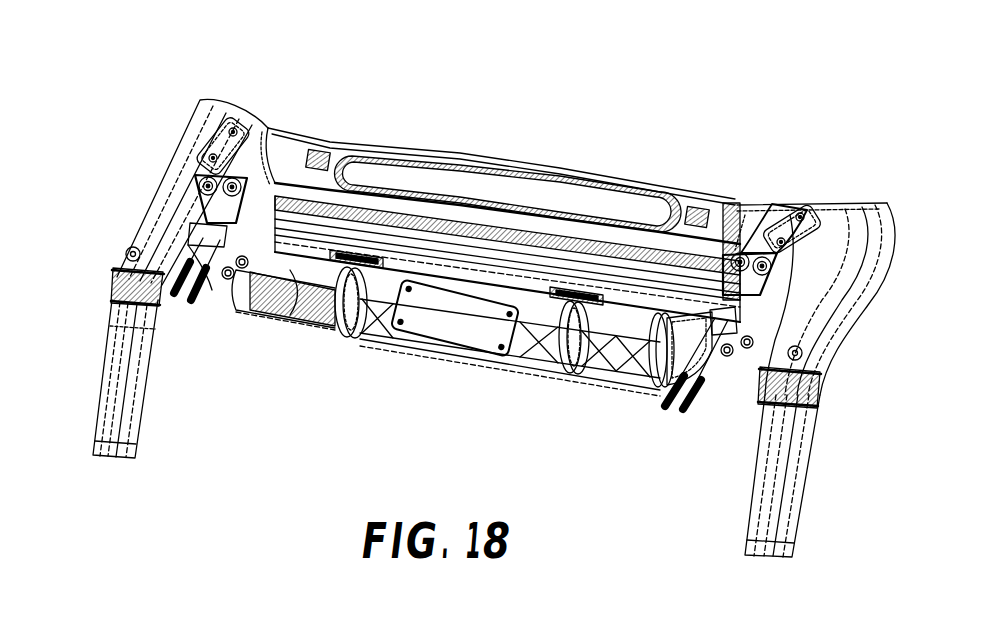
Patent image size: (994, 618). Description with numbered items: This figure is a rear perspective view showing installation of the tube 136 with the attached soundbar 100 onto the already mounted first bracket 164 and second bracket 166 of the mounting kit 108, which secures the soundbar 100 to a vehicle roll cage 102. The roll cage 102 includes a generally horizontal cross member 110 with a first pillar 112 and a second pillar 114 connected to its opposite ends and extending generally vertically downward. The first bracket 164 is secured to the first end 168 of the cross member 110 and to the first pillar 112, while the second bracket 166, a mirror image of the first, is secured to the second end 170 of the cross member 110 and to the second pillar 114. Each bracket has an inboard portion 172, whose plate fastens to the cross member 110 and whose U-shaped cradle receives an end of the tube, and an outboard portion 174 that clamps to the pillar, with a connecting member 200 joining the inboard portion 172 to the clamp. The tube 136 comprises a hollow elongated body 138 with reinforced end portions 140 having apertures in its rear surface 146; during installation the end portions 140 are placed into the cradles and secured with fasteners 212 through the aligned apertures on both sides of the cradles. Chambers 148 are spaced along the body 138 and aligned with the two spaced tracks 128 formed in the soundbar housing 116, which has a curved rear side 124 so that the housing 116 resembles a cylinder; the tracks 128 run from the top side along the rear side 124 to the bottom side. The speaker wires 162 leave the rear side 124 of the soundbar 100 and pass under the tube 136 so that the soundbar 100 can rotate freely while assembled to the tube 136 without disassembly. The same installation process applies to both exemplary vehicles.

The soundbar 100 is at (340, 375).
The roll cage 102 is at (160, 92).
The mounting kit 108 is at (100, 285).
The cross member 110 is at (283, 167).
The first pillar 112 is at (760, 518).
The second pillar 114 is at (130, 433).
The housing 116 is at (543, 377).
The rear side 124 is at (617, 375).
The track 128 is at (345, 330).
The tube 136 is at (655, 302).
The body 138 is at (305, 252).
The end portions 140 is at (207, 217).
The rear surface 146 is at (502, 283).
The chambers 148 is at (357, 243).
The speaker wires 162 is at (396, 322).
The first bracket 164 is at (787, 283).
The second bracket 166 is at (180, 310).
The first end 168 is at (767, 220).
The second end 170 is at (268, 140).
The inboard portion 172 is at (187, 180).
The outboard portion 174 is at (108, 300).
The connecting member 200 is at (180, 250).
The fasteners 212 is at (673, 420).